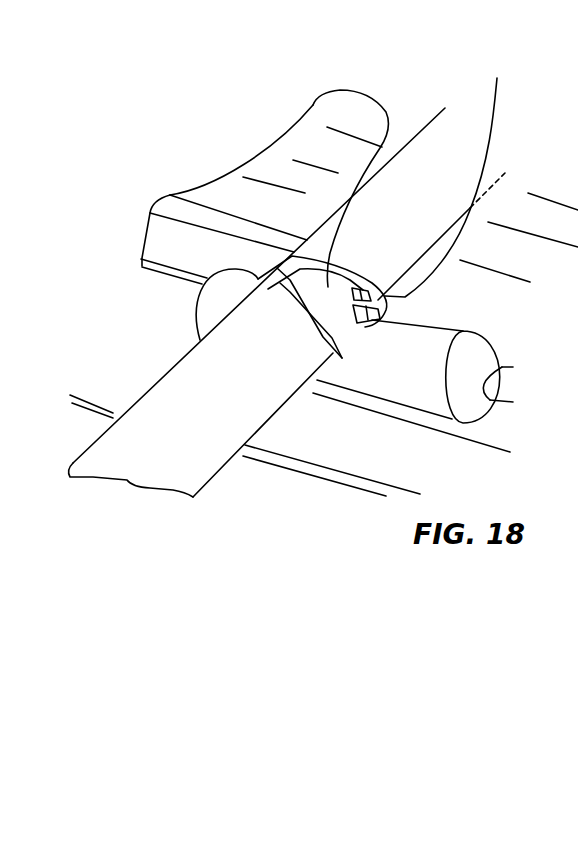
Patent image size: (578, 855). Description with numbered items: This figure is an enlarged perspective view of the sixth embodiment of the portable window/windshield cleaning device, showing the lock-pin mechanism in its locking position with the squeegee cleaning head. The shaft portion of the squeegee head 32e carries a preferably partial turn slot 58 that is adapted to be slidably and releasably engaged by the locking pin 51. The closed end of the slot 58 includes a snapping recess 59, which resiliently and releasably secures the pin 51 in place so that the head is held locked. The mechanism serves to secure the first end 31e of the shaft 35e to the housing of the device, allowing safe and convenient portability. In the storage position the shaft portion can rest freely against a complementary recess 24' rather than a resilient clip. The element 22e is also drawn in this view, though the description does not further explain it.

The rail 22e is at (387, 495).
The fastener 24' is at (387, 336).
The clamp 31e is at (295, 358).
The slider block 32e is at (330, 91).
The plate 35e is at (153, 478).
The roller 51 is at (390, 313).
The arm 58 is at (413, 167).
The cable 59 is at (447, 170).